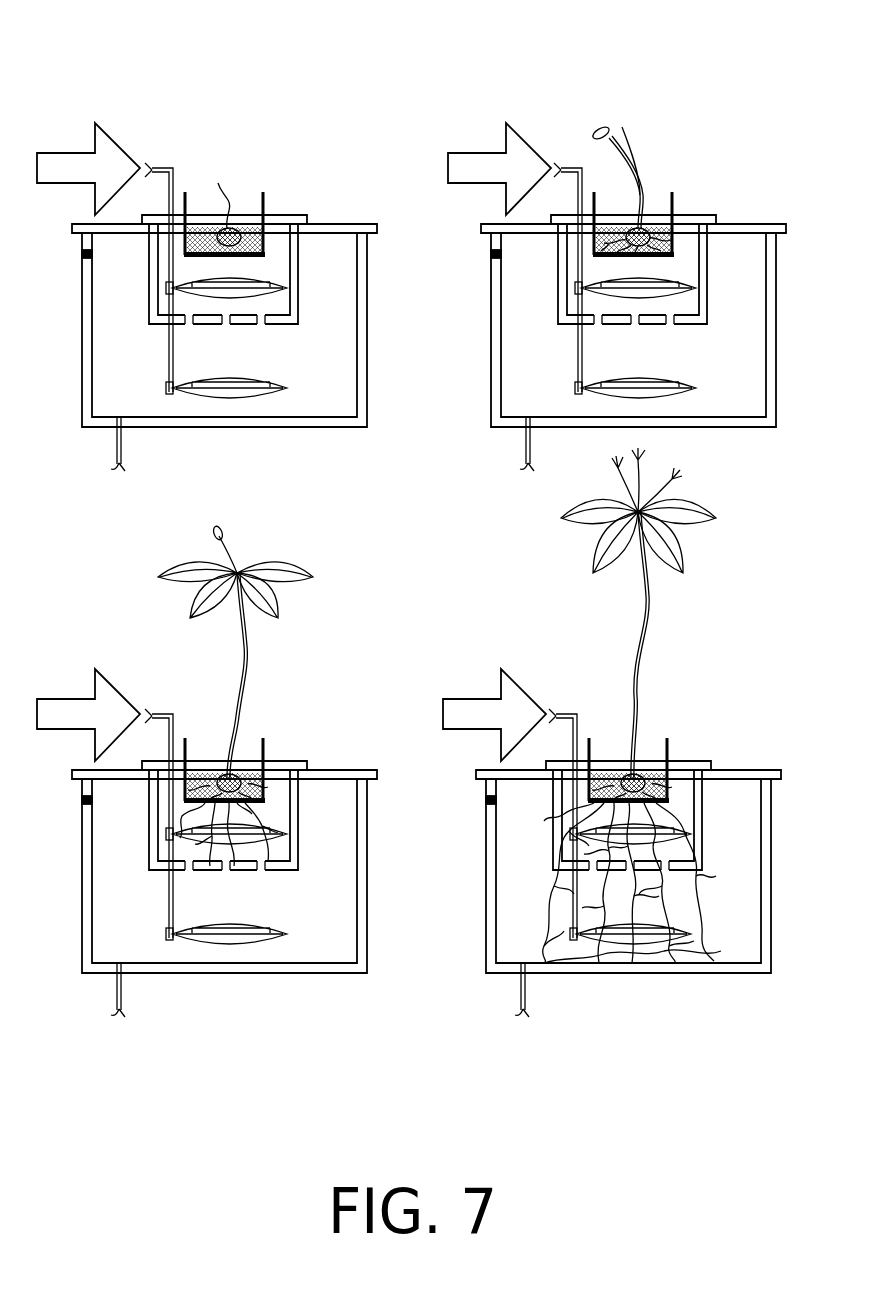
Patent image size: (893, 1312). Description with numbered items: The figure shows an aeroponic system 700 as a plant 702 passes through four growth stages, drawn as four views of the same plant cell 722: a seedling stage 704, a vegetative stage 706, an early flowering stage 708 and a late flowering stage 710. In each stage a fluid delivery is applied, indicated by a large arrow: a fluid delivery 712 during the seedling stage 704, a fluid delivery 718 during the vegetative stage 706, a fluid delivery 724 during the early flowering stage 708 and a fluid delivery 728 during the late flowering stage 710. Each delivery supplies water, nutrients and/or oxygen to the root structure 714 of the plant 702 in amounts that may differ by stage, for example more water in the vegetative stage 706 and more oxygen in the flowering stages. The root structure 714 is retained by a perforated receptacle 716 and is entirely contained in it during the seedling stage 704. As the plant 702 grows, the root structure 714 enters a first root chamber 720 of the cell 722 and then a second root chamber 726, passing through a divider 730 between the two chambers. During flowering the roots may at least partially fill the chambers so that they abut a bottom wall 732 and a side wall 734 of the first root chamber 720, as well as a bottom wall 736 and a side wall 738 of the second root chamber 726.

The aeroponic system 700 is at (103, 40).
The plant 702 is at (227, 181).
The seedling stage 704 is at (136, 107).
The vegetative stage 706 is at (545, 107).
The early flowering stage 708 is at (129, 661).
The late flowering stage 710 is at (541, 664).
The fluid delivery 712 is at (112, 184).
The root structure 714 is at (243, 232).
The perforated receptacle 716 is at (265, 210).
The fluid delivery 718 is at (525, 184).
The first root chamber 720 is at (685, 228).
The plant cell 722 is at (337, 455).
The fluid delivery 724 is at (112, 730).
The second root chamber 726 is at (343, 912).
The fluid delivery 728 is at (526, 730).
The divider 730 is at (585, 864).
The bottom wall of the first root chamber 732 is at (583, 884).
The side wall of the first root chamber 734 is at (567, 830).
The bottom wall of the second root chamber 736 is at (505, 967).
The side wall of the second root chamber 738 is at (491, 915).